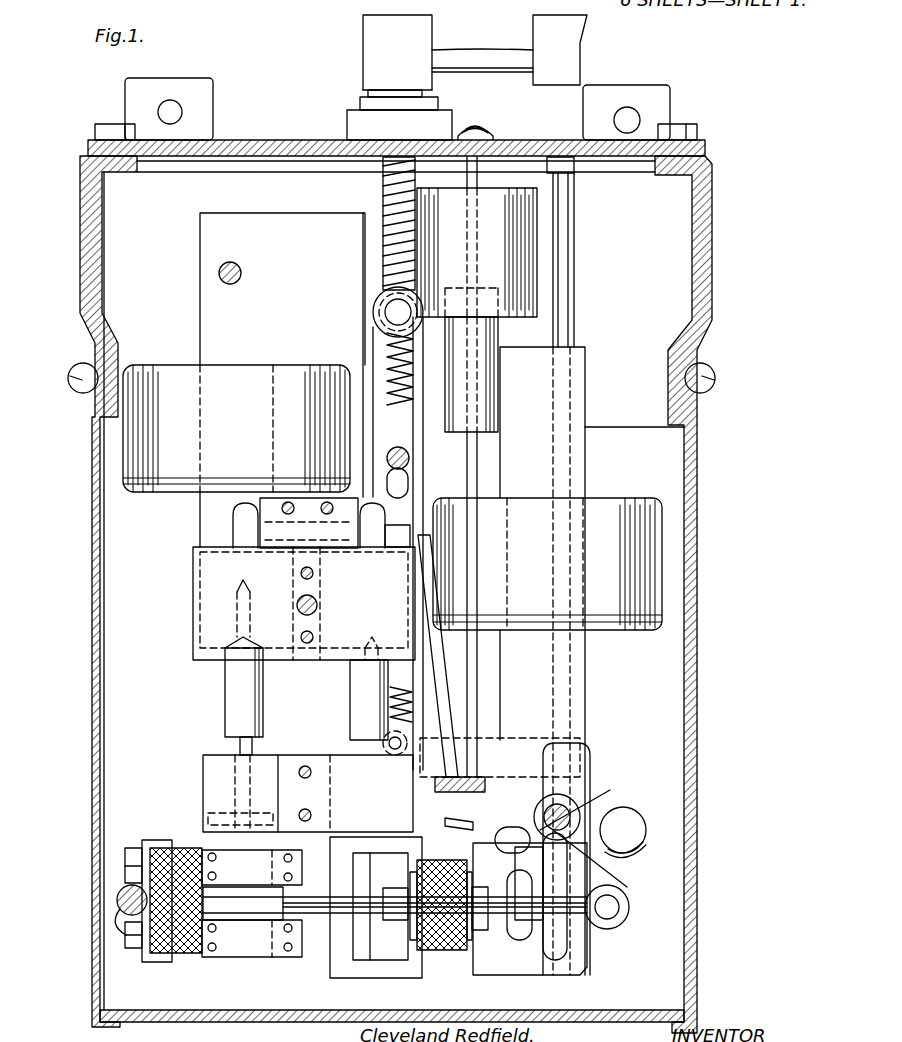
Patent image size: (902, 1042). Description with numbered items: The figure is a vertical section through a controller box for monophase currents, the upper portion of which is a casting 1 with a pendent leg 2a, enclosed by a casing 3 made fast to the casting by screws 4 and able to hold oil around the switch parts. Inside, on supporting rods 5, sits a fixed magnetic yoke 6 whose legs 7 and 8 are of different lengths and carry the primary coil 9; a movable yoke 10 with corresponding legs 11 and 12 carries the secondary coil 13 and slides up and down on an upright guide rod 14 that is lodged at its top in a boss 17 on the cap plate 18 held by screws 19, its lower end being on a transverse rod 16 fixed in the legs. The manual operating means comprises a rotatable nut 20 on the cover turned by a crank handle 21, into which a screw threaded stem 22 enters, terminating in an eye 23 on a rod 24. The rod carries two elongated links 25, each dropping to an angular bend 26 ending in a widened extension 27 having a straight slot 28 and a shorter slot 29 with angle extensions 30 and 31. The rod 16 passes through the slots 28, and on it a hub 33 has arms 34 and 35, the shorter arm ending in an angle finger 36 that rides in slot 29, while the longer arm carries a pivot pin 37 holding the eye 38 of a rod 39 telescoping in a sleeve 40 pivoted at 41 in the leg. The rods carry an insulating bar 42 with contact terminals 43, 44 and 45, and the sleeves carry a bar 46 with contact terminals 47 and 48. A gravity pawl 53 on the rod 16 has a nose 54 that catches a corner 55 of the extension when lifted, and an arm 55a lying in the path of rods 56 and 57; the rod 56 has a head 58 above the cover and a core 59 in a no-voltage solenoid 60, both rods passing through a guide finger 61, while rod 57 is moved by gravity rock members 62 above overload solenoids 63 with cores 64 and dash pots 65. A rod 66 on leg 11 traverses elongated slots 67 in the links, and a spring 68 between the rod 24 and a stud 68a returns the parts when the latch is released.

The casting 1 is at (80, 268).
The leg 2a is at (103, 760).
The casing 3 is at (92, 662).
The screws 4 is at (78, 392).
The supporting rods 5 is at (238, 282).
The magnetic yoke 6 is at (200, 332).
The leg 7 is at (338, 297).
The leg 8 is at (345, 655).
The coil 9 is at (160, 492).
The magnetic yoke 10 is at (586, 462).
The leg 11 is at (373, 352).
The leg 12 is at (459, 656).
The coil 13 is at (624, 628).
The guide rod 14 is at (576, 320).
The rod 16 is at (566, 806).
The boss 17 is at (576, 166).
The cap plate 18 is at (258, 140).
The screws 19 is at (114, 126).
The rotatable nut 20 is at (425, 92).
The crank handle 21 is at (483, 62).
The screw threaded stem 22 is at (383, 186).
The eye 23 is at (386, 300).
The rod 24 is at (385, 312).
The elongated links 25 is at (417, 434).
The angular bend 26 is at (448, 745).
The widened extension 27 is at (590, 756).
The slot 28 is at (562, 946).
The slot 29 is at (530, 909).
The angle extension 30 is at (529, 883).
The angle extension 31 is at (520, 940).
The hub 33 is at (615, 812).
The arm 34 is at (608, 870).
The arm 35 is at (548, 808).
The angle finger 36 is at (510, 830).
The pivot pin 37 is at (616, 906).
The eye 38 is at (626, 920).
The rod 39 is at (496, 925).
The sleeve 40 is at (226, 920).
The pivotal support 41 is at (117, 902).
The bar 42 is at (446, 950).
The contact terminal 43 is at (342, 978).
The contact terminal 44 is at (338, 860).
The contact terminal 45 is at (396, 960).
The bar 46 is at (186, 952).
The contact terminal 47 is at (252, 938).
The contact terminal 48 is at (252, 867).
The gravity pawl 53 is at (636, 826).
The nose 54 is at (647, 830).
The corner 55 is at (584, 970).
The arm 55a is at (452, 824).
The rod 56 is at (477, 659).
The rod 57 is at (445, 677).
The head 58 is at (492, 130).
The core 59 is at (498, 382).
The solenoid 60 is at (537, 250).
The guide finger 61 is at (472, 780).
The gravity rock members 62 is at (236, 510).
The solenoids 63 is at (304, 603).
The cores 64 is at (225, 692).
The dash pots 65 is at (203, 784).
The rod 66 is at (410, 459).
The elongated slots 67 is at (409, 485).
The spring 68 is at (402, 527).
The stud 68a is at (383, 743).